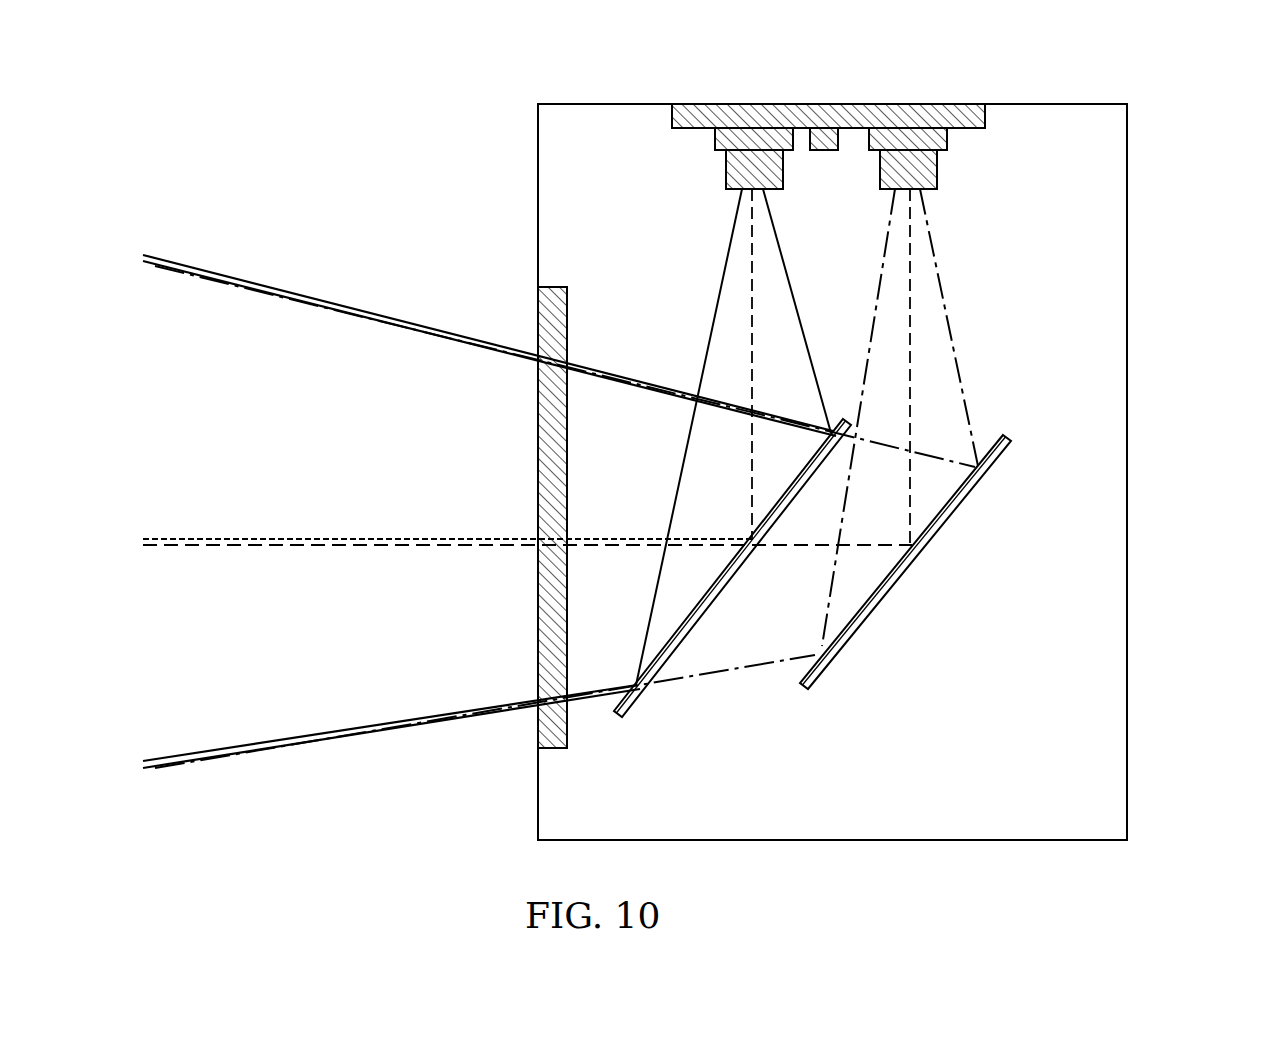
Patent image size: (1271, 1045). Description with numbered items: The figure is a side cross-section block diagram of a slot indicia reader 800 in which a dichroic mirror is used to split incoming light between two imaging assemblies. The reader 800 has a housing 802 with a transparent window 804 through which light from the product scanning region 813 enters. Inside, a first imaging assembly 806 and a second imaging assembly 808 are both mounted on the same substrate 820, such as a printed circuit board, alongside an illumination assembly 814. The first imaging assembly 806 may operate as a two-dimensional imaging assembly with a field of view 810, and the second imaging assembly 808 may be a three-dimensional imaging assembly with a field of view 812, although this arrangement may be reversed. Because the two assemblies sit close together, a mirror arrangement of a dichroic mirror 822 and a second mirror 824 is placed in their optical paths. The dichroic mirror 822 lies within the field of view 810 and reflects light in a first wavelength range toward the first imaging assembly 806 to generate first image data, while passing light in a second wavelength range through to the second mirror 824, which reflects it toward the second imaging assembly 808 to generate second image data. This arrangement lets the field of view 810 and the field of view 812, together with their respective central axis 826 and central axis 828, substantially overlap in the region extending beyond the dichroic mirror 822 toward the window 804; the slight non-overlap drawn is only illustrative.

The indicia reader 800 is at (1159, 84).
The housing 802 is at (1128, 203).
The transparent window 804 is at (544, 745).
The first imaging assembly 806 is at (672, 151).
The second imaging assembly 808 is at (992, 170).
The field of view 810 is at (730, 224).
The field of view 812 is at (876, 273).
The product scanning region 813 is at (175, 436).
The illumination assembly 814 is at (820, 136).
The substrate 820 is at (727, 116).
The dichroic mirror 822 is at (632, 709).
The second mirror 824 is at (822, 679).
The central axis 826 is at (342, 538).
The central axis 828 is at (338, 547).